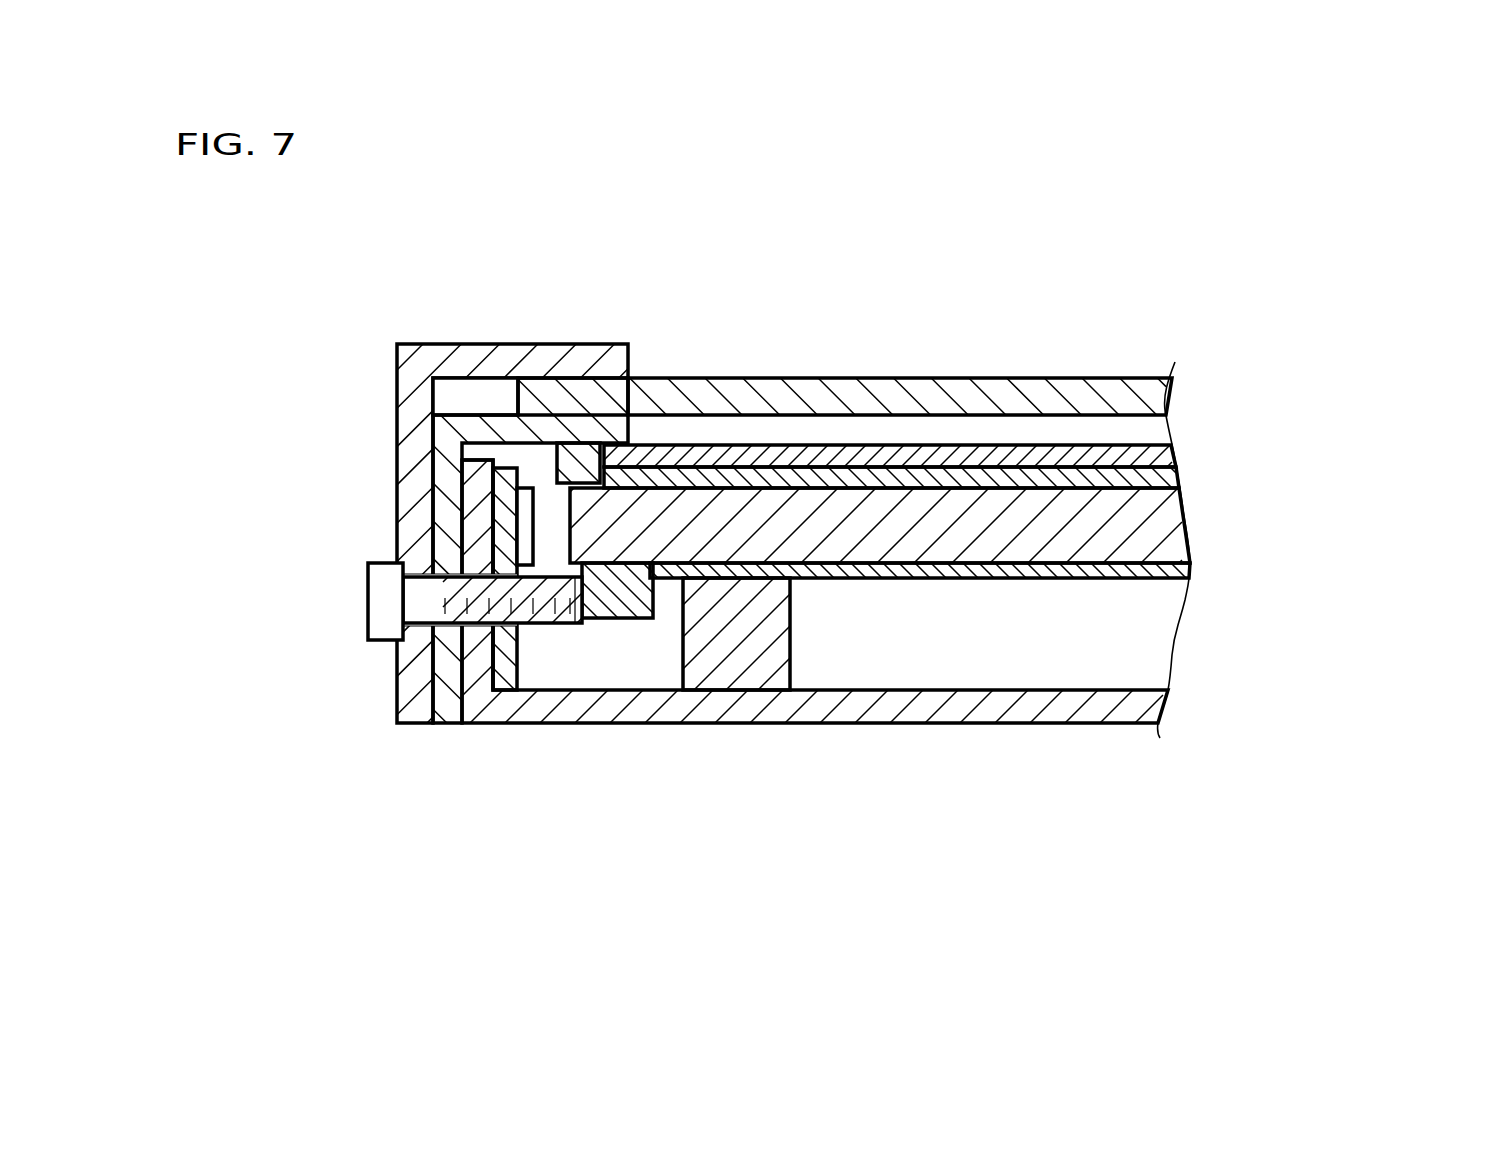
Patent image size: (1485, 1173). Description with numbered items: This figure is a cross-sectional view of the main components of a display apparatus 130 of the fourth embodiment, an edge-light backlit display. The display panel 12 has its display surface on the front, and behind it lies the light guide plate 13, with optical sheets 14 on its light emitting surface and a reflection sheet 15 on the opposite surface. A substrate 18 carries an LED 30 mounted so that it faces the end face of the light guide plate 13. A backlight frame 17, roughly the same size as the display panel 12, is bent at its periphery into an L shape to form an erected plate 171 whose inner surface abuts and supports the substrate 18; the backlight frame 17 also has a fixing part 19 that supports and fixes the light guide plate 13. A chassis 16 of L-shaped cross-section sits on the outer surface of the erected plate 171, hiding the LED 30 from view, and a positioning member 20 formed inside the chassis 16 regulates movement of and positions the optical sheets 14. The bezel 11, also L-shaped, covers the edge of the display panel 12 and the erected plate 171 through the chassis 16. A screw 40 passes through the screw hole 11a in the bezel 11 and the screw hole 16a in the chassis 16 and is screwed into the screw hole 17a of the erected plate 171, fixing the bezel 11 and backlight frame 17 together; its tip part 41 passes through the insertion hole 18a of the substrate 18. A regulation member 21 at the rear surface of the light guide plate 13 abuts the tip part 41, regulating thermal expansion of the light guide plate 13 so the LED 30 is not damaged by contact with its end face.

The display apparatus 130 is at (1407, 170).
The bezel 11 is at (450, 345).
The chassis 16 is at (483, 422).
The LED 30 is at (525, 490).
The positioning member 20 is at (583, 453).
The display panel 12 is at (918, 382).
The substrate 18 is at (500, 500).
The insertion hole 18a is at (495, 577).
The screw hole 11a is at (410, 589).
The screw hole 16a is at (440, 584).
The screw 40 is at (368, 610).
The screw hole 17a is at (470, 626).
The erected plate 171 is at (482, 680).
The optical sheets 14 is at (1172, 477).
The light guide plate 13 is at (1172, 522).
The reflection sheet 15 is at (1190, 571).
The backlight frame 17 is at (697, 639).
The fixing part 19 is at (725, 667).
The regulation member 21 is at (608, 608).
The tip part 41 is at (547, 620).